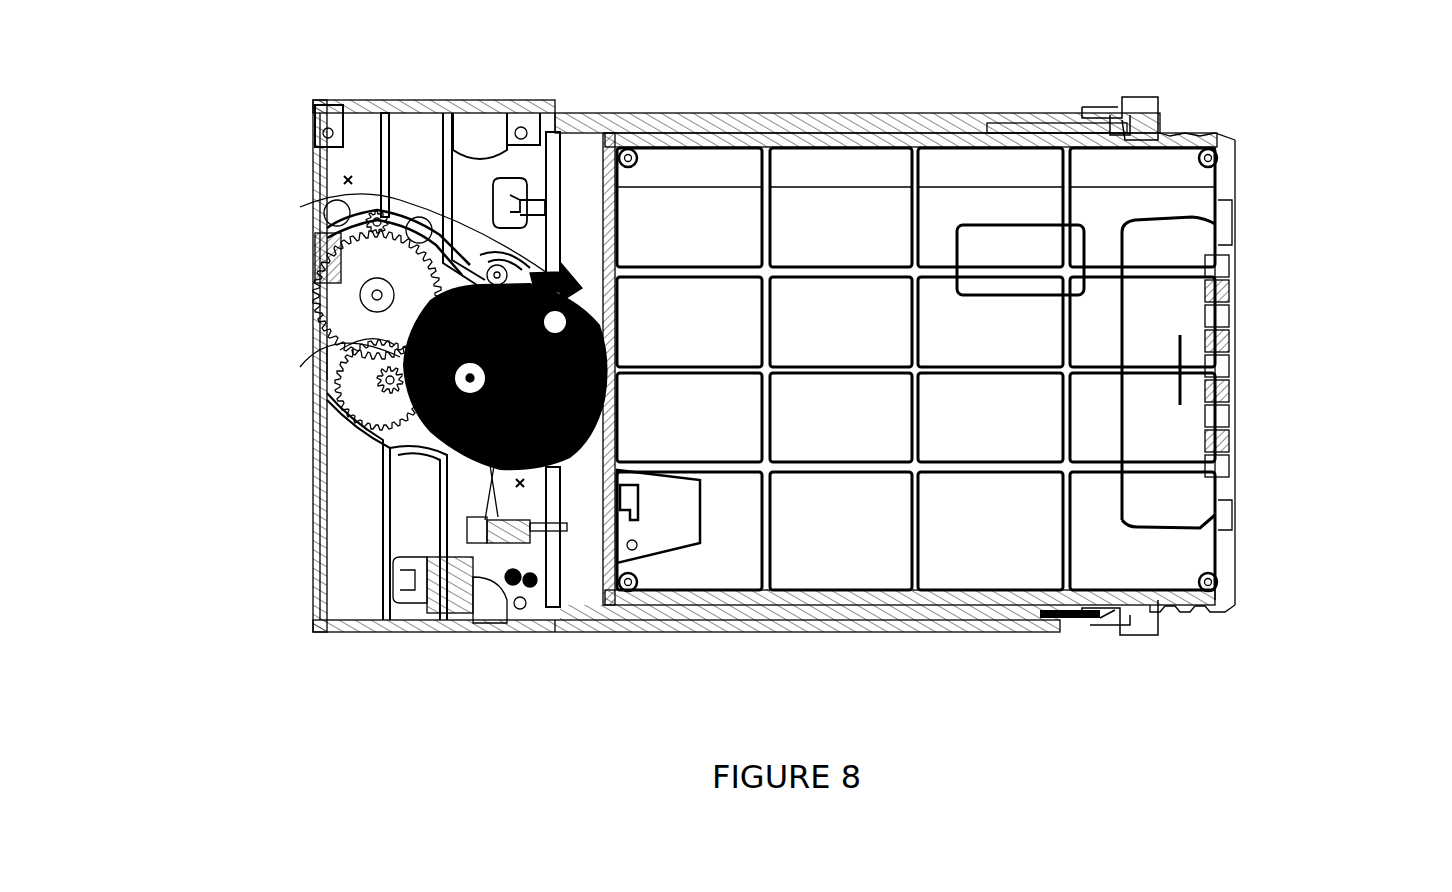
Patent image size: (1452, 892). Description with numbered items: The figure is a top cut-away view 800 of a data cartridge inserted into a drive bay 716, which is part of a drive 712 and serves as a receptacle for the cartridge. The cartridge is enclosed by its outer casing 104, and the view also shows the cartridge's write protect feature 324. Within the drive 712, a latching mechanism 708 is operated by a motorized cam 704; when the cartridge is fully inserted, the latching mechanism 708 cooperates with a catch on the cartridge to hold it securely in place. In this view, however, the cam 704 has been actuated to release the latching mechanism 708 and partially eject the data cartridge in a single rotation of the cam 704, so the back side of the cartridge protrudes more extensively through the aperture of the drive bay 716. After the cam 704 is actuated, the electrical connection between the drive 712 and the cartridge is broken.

The top cut-away view 800 is at (902, 58).
The drive bay 716 is at (1160, 133).
The outer casing 104 is at (861, 386).
The latching mechanism 708 is at (300, 207).
The motorized cam 704 is at (335, 337).
The write protect feature 324 is at (645, 512).
The drive 712 is at (1004, 622).